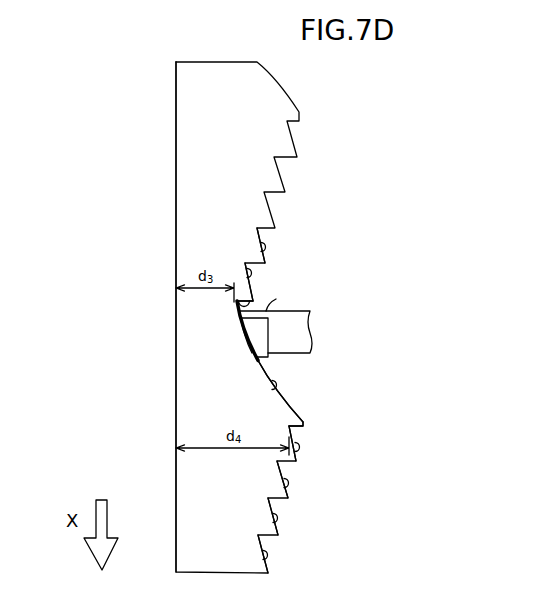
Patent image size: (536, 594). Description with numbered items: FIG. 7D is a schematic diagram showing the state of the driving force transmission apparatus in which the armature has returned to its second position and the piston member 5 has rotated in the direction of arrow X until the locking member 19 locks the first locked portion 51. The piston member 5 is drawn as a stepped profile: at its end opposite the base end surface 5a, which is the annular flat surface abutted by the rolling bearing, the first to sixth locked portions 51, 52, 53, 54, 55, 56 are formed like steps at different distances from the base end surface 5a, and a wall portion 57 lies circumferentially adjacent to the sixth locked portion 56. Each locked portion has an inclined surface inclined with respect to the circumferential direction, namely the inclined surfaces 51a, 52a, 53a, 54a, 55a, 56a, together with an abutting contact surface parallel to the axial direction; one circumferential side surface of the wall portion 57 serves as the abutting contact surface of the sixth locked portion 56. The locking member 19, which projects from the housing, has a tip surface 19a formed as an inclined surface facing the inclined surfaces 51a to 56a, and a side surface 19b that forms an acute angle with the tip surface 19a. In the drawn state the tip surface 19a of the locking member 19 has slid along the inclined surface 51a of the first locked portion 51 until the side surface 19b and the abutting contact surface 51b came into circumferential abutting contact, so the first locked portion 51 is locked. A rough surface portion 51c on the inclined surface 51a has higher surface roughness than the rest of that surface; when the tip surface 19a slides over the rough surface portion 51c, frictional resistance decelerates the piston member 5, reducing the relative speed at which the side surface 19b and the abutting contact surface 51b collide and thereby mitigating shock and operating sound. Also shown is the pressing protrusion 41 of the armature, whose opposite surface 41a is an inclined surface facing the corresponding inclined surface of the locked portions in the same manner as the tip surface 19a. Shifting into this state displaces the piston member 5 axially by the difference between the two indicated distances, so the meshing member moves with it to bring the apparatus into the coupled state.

The piston member 5 is at (326, 133).
The base end surface 5a is at (175, 209).
The locking member 19 is at (303, 316).
The tip surface 19a is at (244, 331).
The side surface 19b is at (274, 300).
The pressing protrusion 41 is at (262, 347).
The opposite surface 41a is at (262, 346).
The first locked portion 51 is at (286, 299).
The inclined surface 51a is at (270, 384).
The abutting contact surface 51b is at (238, 304).
The rough surface portion 51c is at (220, 317).
The second locked portion 52 is at (285, 265).
The inclined surface 52a is at (246, 270).
The third locked portion 53 is at (286, 231).
The inclined surface 53a is at (259, 244).
The fourth locked portion 54 is at (304, 516).
The inclined surface 54a is at (272, 522).
The fifth locked portion 55 is at (314, 481).
The inclined surface 55a is at (283, 487).
The sixth locked portion 56 is at (320, 443).
The inclined surface 56a is at (290, 453).
The wall portion 57 is at (320, 415).